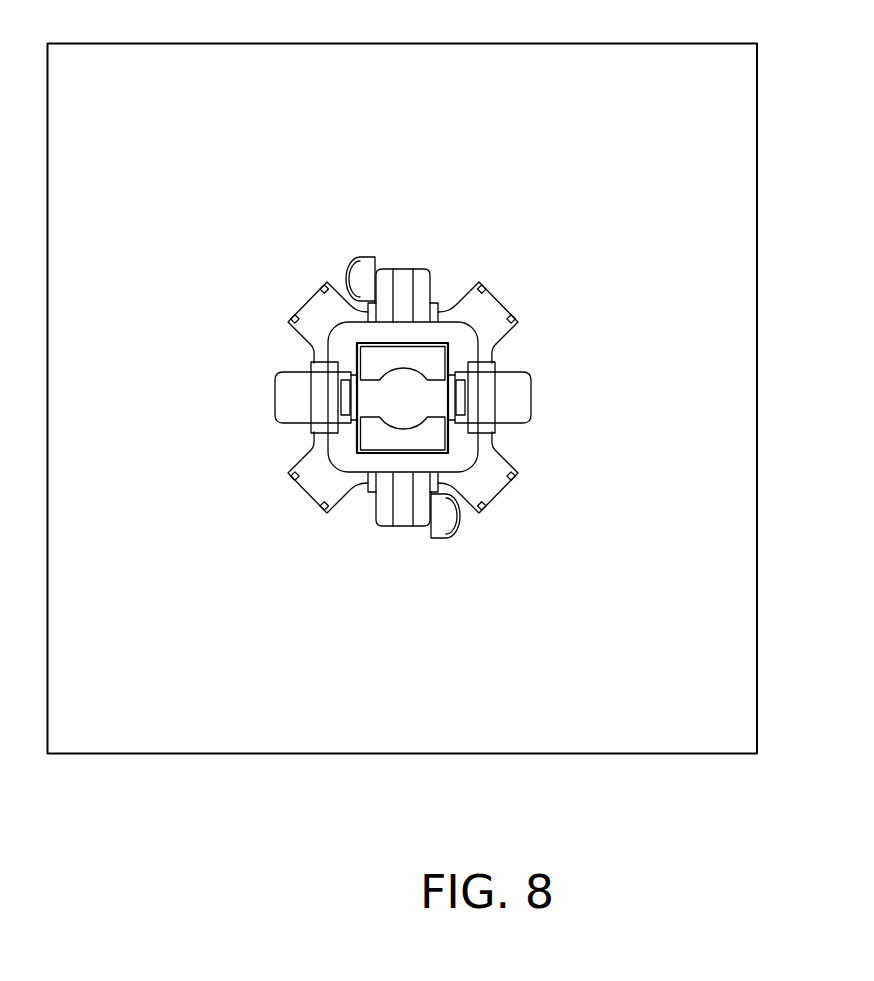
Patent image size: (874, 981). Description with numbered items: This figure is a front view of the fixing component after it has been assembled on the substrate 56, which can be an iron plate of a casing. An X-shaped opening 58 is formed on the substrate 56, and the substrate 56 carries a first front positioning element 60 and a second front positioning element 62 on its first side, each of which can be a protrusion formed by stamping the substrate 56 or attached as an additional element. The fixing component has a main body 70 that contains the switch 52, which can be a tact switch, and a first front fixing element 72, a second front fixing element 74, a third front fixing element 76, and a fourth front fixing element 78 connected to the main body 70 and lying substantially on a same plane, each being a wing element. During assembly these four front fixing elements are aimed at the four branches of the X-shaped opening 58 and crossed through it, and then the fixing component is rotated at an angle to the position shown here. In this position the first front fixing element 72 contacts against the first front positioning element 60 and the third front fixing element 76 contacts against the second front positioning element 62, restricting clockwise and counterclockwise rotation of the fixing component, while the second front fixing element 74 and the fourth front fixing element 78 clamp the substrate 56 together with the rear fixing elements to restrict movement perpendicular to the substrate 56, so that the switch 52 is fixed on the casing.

The switch 52 is at (433, 352).
The substrate 56 is at (757, 122).
The opening 58 is at (477, 318).
The first front positioning element 60 is at (360, 264).
The second front positioning element 62 is at (455, 532).
The main body 70 is at (343, 355).
The first front fixing element 72 is at (401, 277).
The second front fixing element 74 is at (523, 402).
The third front fixing element 76 is at (401, 518).
The fourth front fixing element 78 is at (283, 402).